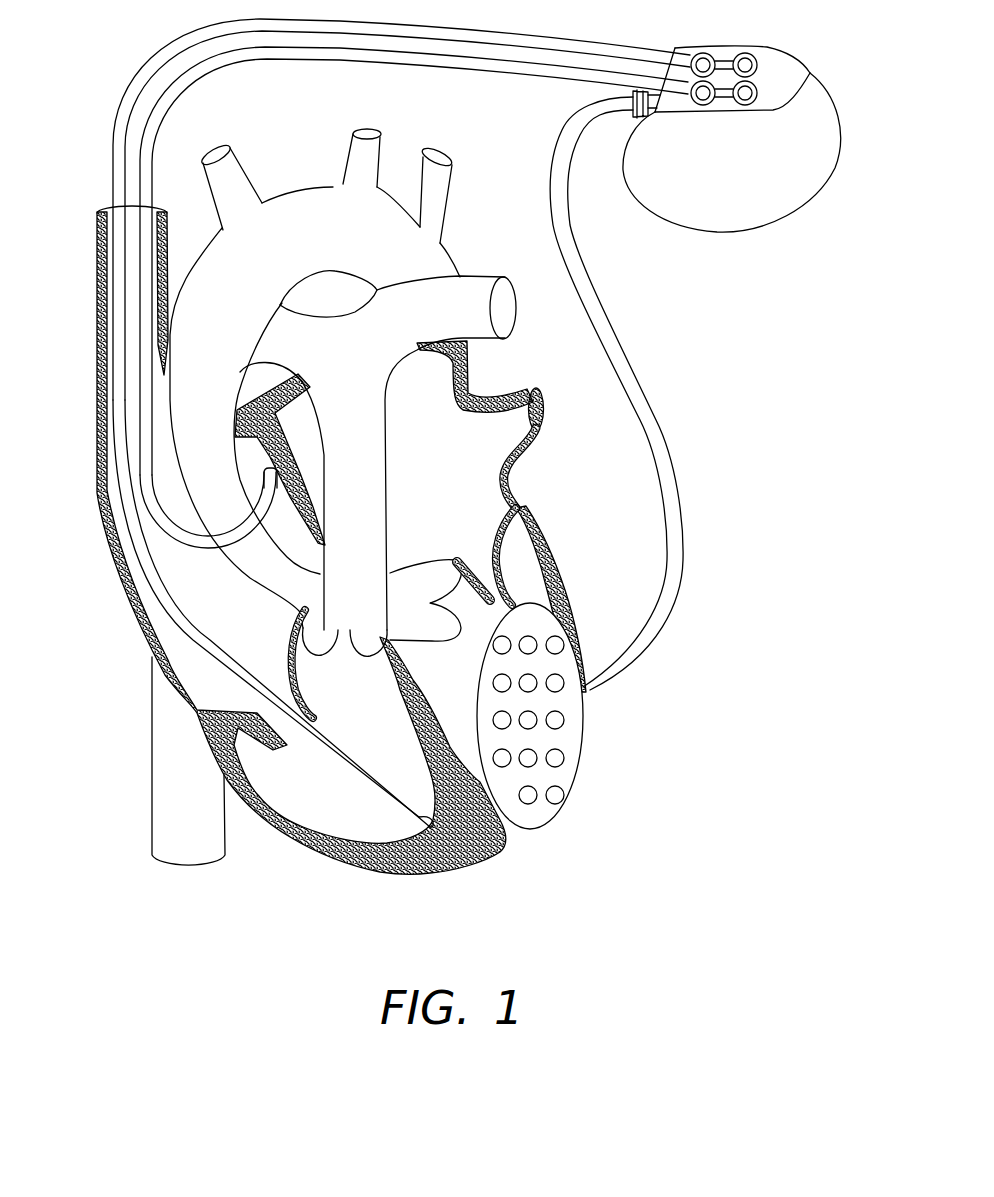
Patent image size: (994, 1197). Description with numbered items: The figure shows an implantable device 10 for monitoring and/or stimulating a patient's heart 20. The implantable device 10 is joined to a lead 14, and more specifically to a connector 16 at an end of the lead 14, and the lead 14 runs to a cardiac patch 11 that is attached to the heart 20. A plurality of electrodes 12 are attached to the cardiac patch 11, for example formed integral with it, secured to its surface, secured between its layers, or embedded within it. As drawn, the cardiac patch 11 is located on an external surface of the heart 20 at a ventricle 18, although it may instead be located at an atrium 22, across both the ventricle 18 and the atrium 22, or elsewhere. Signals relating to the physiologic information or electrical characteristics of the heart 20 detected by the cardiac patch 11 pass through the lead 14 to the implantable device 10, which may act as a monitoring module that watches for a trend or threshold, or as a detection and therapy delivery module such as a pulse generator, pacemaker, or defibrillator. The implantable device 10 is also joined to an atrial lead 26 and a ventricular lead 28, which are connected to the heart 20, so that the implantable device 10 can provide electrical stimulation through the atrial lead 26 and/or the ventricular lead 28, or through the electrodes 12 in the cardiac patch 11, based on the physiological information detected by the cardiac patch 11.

The implantable device 10 is at (745, 233).
The cardiac patch 11 is at (570, 797).
The electrodes 12 is at (557, 753).
The lead 14 is at (680, 493).
The connector 16 is at (631, 118).
The ventricle 18 is at (527, 590).
The heart 20 is at (527, 493).
The atrium 22 is at (445, 427).
The atrial lead 26 is at (148, 143).
The ventricular lead 28 is at (152, 58).